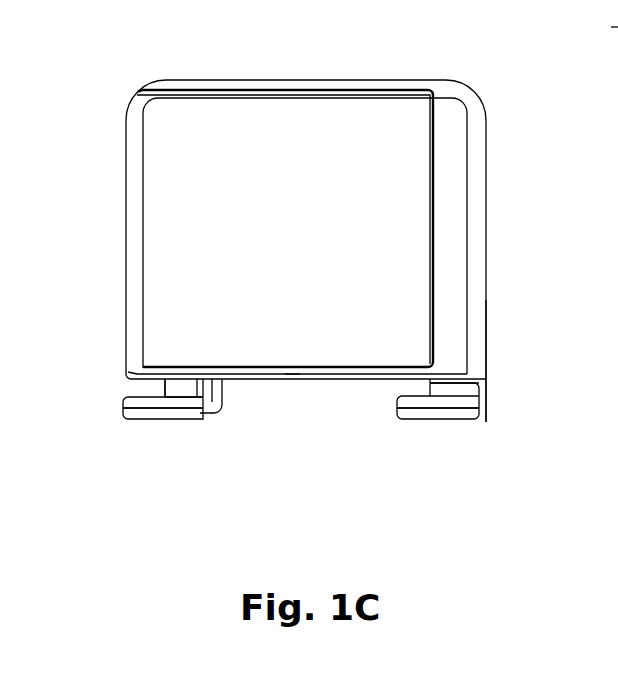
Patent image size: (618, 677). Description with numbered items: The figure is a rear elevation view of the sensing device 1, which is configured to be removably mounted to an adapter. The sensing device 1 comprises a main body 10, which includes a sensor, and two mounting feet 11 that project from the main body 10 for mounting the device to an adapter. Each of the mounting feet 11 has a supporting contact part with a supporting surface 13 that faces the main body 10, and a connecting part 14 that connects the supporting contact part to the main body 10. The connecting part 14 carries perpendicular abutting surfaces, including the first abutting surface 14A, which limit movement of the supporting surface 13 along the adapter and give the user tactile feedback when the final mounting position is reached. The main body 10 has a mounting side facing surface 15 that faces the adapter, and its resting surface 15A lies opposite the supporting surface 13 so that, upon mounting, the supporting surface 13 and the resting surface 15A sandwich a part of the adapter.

The sensing device 1 is at (548, 429).
The main body 10 is at (316, 138).
The mounting feet 11 is at (152, 441).
The supporting surface 13 is at (139, 397).
The connecting part 14 is at (208, 391).
The first abutting surface 14A is at (177, 387).
The mounting side facing surface 15 is at (293, 383).
The resting surface 15A is at (190, 384).